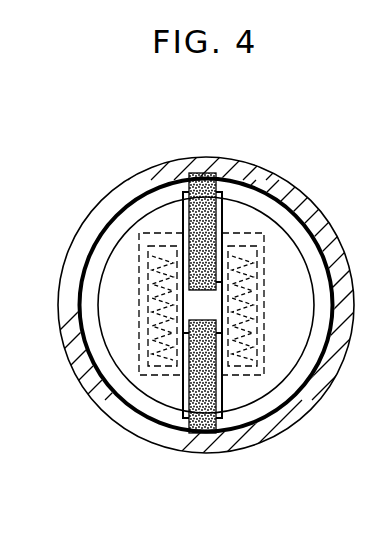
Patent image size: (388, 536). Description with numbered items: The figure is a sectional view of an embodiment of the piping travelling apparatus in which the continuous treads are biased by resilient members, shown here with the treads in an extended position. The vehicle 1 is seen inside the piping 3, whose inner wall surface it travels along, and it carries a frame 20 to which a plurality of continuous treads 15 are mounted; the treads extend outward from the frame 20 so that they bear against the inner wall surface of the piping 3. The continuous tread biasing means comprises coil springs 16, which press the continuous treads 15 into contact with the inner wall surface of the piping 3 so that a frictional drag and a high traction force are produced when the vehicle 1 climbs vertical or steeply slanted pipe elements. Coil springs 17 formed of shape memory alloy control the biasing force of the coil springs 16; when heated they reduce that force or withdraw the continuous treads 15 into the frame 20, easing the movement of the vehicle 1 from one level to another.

The vehicle 1 is at (105, 365).
The piping 3 is at (135, 183).
The continuous treads 15 is at (205, 172).
The coil springs 16 is at (262, 352).
The coil springs formed of shape memory alloy 17 is at (202, 308).
The frame 20 is at (120, 285).